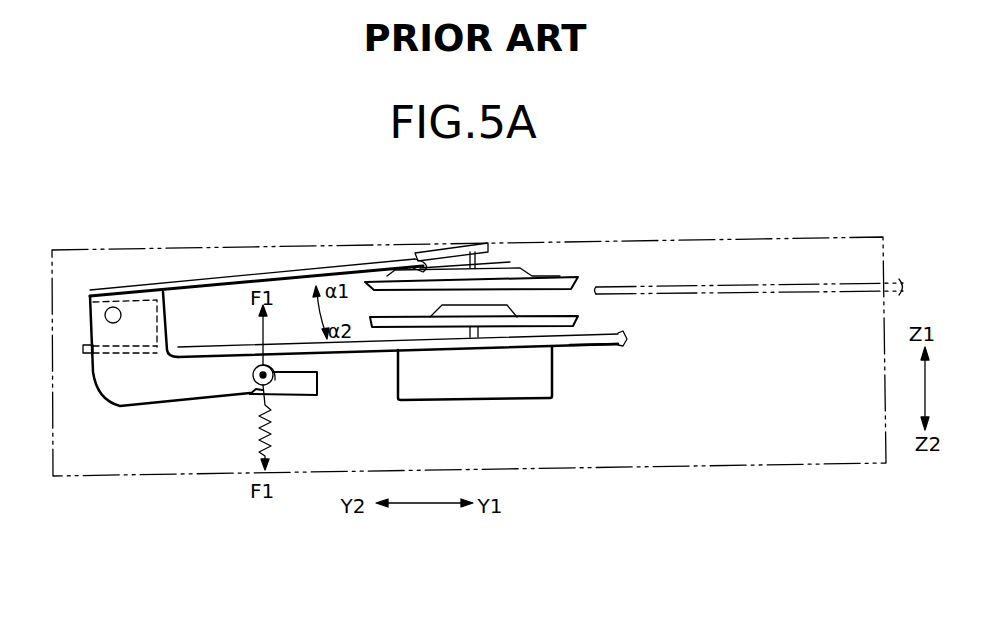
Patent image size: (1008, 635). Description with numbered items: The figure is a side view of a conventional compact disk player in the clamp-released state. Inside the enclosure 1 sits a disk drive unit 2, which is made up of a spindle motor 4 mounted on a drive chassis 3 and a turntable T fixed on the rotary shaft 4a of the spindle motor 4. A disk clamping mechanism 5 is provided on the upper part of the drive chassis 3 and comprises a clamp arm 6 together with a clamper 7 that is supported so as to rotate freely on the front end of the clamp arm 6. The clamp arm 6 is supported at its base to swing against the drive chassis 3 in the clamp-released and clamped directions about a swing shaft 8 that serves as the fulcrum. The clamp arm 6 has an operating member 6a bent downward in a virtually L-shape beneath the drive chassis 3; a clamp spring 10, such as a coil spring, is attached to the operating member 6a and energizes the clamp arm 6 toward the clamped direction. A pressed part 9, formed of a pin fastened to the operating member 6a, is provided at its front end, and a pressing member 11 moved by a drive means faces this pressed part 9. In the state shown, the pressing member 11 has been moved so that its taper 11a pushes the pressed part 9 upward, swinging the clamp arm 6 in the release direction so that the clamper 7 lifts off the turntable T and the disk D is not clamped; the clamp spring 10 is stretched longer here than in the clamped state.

The enclosure 1 is at (793, 238).
The disk drive unit 2 is at (633, 348).
The drive chassis 3 is at (598, 344).
The spindle motor 4 is at (533, 382).
The rotary shaft 4a is at (468, 343).
The disk clamping mechanism 5 is at (548, 269).
The clamp arm 6 is at (262, 280).
The operating member 6a is at (163, 390).
The clamper 7 is at (536, 280).
The swing shaft 8 is at (113, 307).
The pressed part 9 is at (273, 364).
The clamp spring 10 is at (272, 437).
The pressing member 11 is at (306, 388).
The taper 11a is at (254, 395).
The turntable T is at (401, 319).
The disk D is at (690, 286).